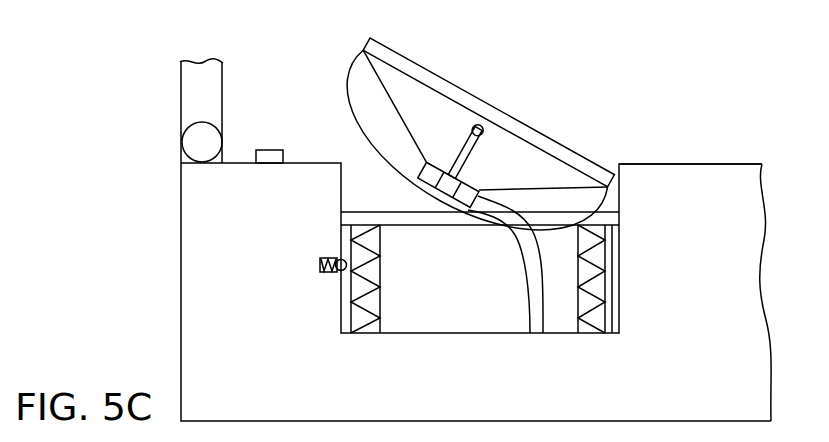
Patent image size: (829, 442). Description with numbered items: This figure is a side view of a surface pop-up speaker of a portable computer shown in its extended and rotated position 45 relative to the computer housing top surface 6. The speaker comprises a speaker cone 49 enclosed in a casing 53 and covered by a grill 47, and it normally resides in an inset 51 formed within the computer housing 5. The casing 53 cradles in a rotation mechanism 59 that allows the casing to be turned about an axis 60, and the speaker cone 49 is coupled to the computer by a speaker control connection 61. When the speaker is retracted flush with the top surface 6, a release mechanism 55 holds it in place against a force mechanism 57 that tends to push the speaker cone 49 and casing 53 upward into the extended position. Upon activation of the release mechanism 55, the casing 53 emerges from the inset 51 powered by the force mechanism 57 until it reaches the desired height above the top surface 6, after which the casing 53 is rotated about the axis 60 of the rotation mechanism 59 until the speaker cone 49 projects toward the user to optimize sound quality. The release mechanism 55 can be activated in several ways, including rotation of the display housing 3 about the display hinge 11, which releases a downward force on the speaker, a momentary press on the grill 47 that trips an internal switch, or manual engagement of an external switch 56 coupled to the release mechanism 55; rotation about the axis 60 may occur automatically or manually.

The display housing 3 is at (180, 94).
The computer housing 5 is at (743, 195).
The computer housing top surface 6 is at (720, 163).
The display hinge 11 is at (192, 142).
The extended and rotated position 45 is at (483, 135).
The grill 47 is at (512, 93).
The speaker cone 49 is at (394, 106).
The inset 51 is at (620, 310).
The casing 53 is at (462, 159).
The release mechanism 55 is at (320, 265).
The external switch 56 is at (270, 150).
The force mechanism 57 is at (595, 333).
The rotation mechanism 59 is at (465, 153).
The axis 60 is at (477, 130).
The speaker control connection 61 is at (527, 308).